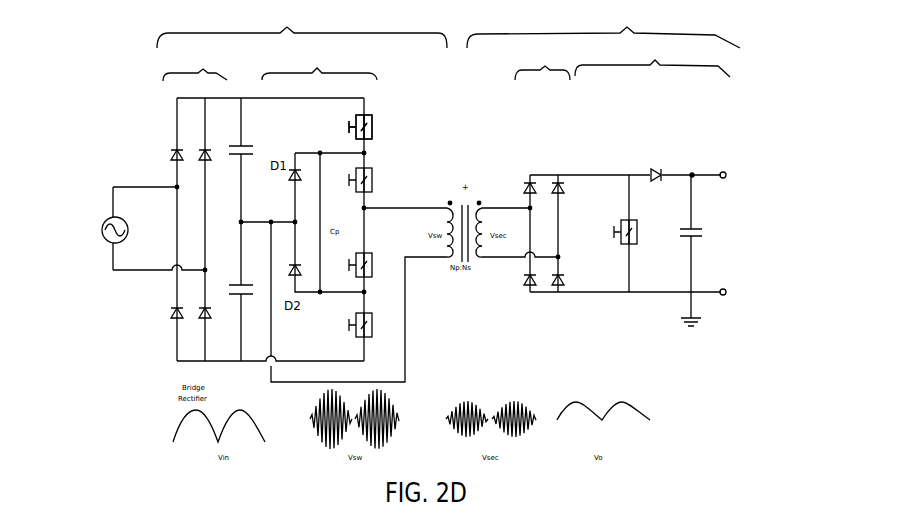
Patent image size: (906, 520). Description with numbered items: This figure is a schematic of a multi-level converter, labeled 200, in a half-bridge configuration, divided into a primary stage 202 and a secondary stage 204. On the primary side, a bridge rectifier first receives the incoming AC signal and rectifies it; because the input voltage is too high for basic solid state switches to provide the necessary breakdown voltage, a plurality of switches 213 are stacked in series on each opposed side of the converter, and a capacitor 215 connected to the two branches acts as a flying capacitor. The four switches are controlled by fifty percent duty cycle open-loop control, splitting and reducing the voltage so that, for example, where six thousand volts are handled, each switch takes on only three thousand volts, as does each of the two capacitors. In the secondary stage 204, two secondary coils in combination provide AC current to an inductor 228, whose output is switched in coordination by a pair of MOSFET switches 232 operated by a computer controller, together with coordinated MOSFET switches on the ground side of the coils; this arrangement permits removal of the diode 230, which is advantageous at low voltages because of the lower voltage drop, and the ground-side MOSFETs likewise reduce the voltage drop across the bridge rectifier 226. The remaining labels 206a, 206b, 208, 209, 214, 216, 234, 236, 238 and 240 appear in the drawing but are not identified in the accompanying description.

The power converter circuit 200 is at (137, 122).
The primary stage 202 is at (302, 26).
The secondary stage 204 is at (603, 26).
The first capacitor 206a is at (244, 144).
The second capacitor 206b is at (222, 288).
The switch network 208 is at (325, 202).
The input bridge rectifier 209 is at (195, 205).
The switches 213 is at (371, 123).
The output stage 214 is at (652, 59).
The capacitor 215 is at (330, 217).
The AC input source 216 is at (106, 222).
The bridge rectifier 226 is at (586, 313).
The inductor 228 is at (612, 168).
The diode 230 is at (666, 172).
The MOSFET switch 232 is at (633, 225).
The output capacitor 234 is at (700, 226).
The positive output terminal 236 is at (727, 174).
The negative output terminal 238 is at (727, 290).
The ground 240 is at (700, 322).